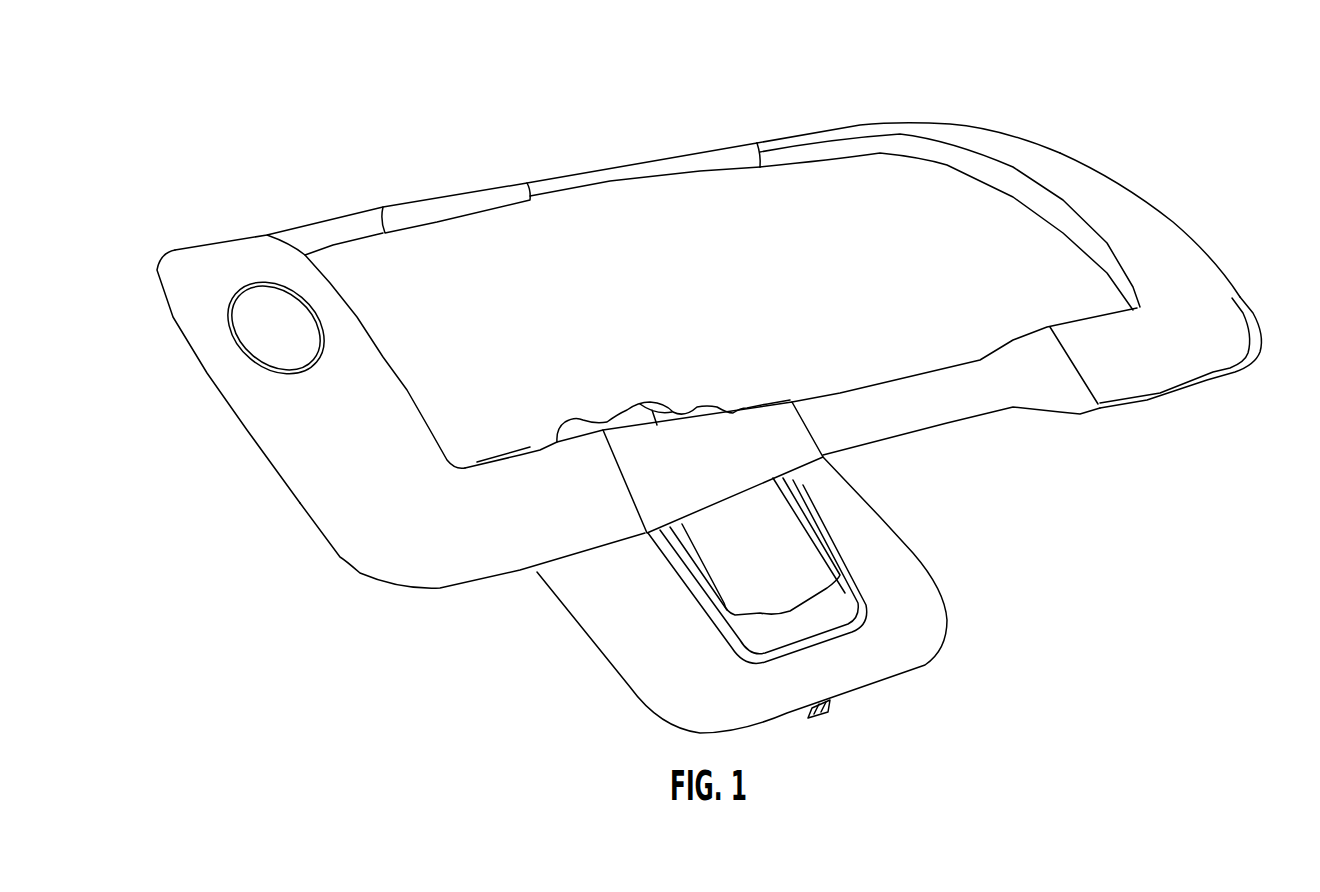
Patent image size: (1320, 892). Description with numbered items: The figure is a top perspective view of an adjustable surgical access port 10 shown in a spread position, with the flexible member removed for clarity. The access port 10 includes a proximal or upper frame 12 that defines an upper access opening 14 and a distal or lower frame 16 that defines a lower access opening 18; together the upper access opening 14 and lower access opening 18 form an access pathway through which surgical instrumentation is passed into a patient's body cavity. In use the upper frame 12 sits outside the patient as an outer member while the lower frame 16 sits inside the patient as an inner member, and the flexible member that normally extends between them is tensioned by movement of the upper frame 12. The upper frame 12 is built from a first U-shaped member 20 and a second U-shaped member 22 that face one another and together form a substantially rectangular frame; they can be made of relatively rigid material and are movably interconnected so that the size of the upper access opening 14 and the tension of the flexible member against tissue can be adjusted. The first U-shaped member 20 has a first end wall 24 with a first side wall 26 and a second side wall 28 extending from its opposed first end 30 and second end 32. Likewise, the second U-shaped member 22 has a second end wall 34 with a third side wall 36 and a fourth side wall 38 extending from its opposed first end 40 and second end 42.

The access port 10 is at (266, 84).
The upper frame 12 is at (343, 176).
The upper access opening 14 is at (846, 205).
The lower frame 16 is at (946, 590).
The lower access opening 18 is at (768, 548).
The first U-shaped member 20 is at (248, 229).
The second U-shaped member 22 is at (1077, 150).
The first end wall 24 is at (250, 428).
The first side wall 26 is at (462, 189).
The second side wall 28 is at (582, 522).
The first end of first end wall 30 is at (197, 248).
The second end of first end wall 32 is at (420, 560).
The second end wall 34 is at (1174, 222).
The third side wall 36 is at (736, 145).
The fourth side wall 38 is at (953, 428).
The first end of second end wall 40 is at (981, 123).
The second end of second end wall 42 is at (1252, 297).